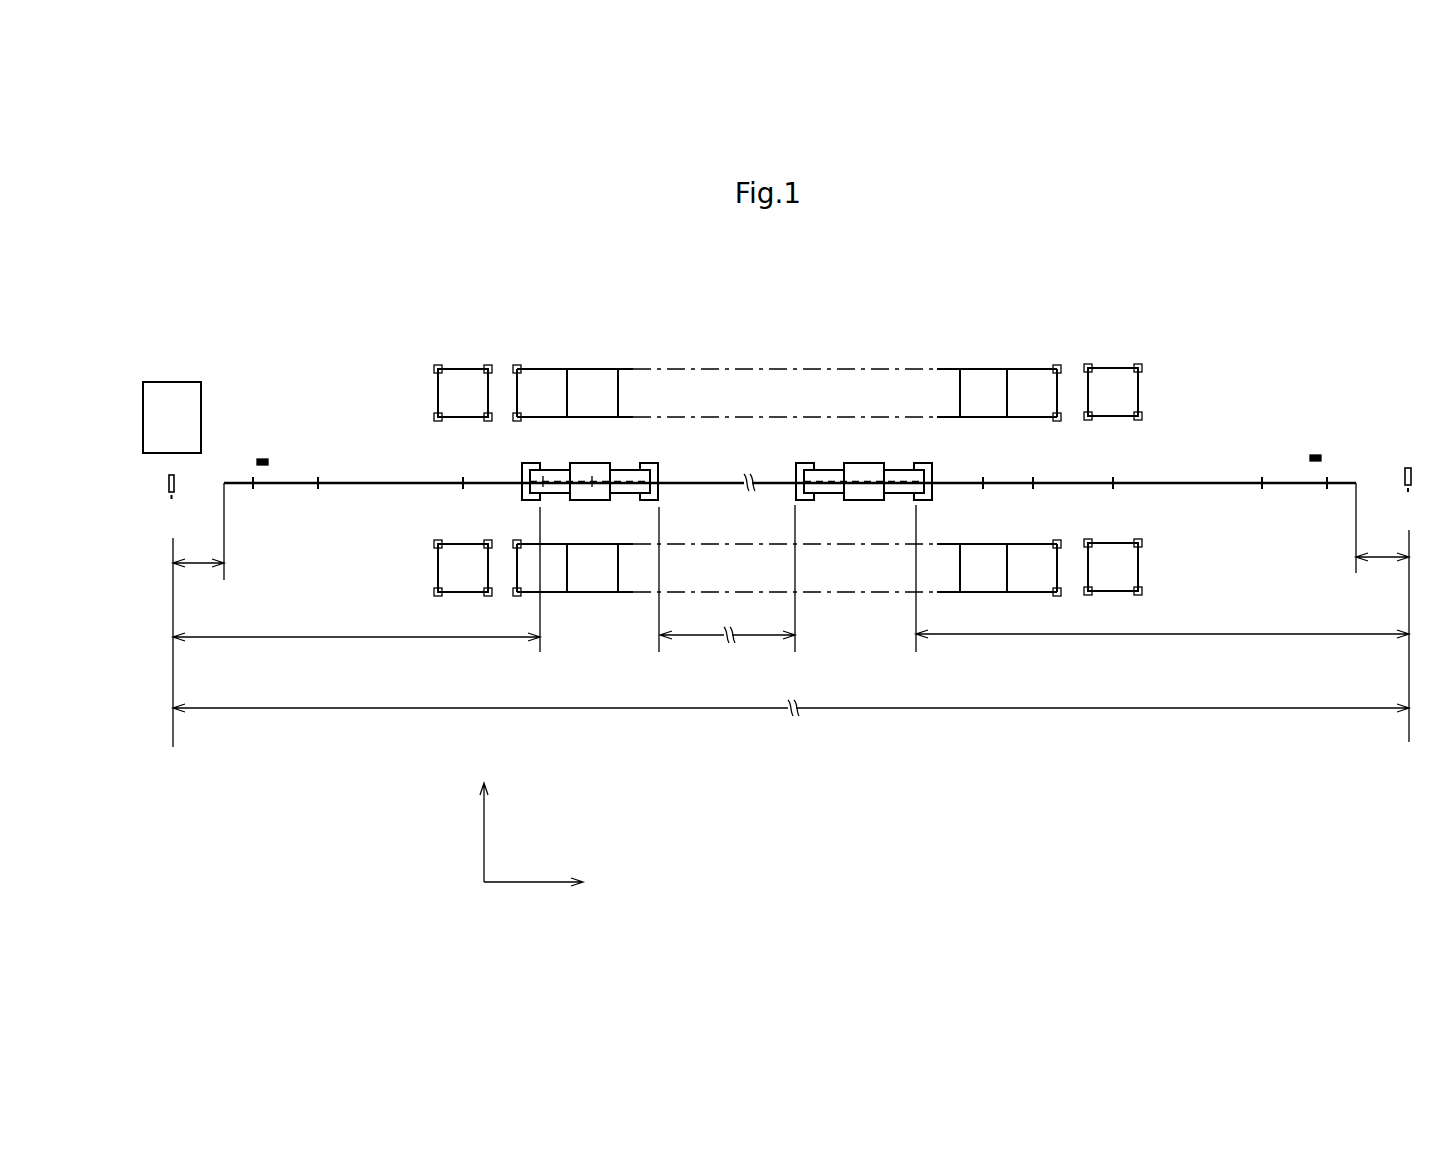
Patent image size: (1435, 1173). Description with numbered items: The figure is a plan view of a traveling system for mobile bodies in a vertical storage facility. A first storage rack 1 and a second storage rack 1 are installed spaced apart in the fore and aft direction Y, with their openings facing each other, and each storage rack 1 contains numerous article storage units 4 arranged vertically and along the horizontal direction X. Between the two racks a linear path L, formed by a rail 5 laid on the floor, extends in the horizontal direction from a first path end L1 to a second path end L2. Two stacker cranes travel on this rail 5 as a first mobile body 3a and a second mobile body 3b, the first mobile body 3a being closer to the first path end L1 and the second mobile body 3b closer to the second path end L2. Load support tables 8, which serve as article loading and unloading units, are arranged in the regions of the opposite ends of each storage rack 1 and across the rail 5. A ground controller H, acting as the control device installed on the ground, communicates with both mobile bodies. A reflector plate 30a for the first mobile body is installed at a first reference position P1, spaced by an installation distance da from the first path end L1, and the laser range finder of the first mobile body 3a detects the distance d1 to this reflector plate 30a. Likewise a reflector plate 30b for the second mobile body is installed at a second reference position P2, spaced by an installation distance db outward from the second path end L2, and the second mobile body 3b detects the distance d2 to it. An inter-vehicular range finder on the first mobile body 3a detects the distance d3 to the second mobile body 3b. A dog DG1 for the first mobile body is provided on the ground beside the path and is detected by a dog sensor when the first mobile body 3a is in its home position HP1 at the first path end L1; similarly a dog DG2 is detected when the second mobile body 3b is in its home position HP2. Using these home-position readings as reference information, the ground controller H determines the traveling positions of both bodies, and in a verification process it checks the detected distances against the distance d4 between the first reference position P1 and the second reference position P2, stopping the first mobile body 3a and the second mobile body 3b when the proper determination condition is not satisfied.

The storage rack 1 is at (768, 345).
The first mobile body 3a is at (628, 470).
The second mobile body 3b is at (866, 462).
The article storage unit 4 is at (586, 369).
The rail 5 is at (706, 488).
The load support table 8 is at (462, 369).
The reflector plate for the first mobile body 30a is at (165, 487).
The reflector plate for the second mobile body 30b is at (1408, 466).
The ground controller H is at (172, 382).
The dog for the first mobile body DG1 is at (263, 457).
The dog for the second mobile body DG2 is at (1315, 453).
The first path end L1 is at (224, 479).
The second path end L2 is at (1356, 479).
The home position of the first mobile body HP1 is at (252, 531).
The home position of the second mobile body HP2 is at (1325, 528).
The first reference position P1 is at (169, 626).
The second reference position P2 is at (1407, 619).
The installation distance da is at (198, 580).
The installation distance db is at (1382, 576).
The distance d1 is at (356, 652).
The distance d2 is at (1162, 650).
The distance d3 is at (727, 653).
The distance d4 is at (791, 722).
The horizontal direction X is at (546, 882).
The fore and aft direction Y is at (483, 814).